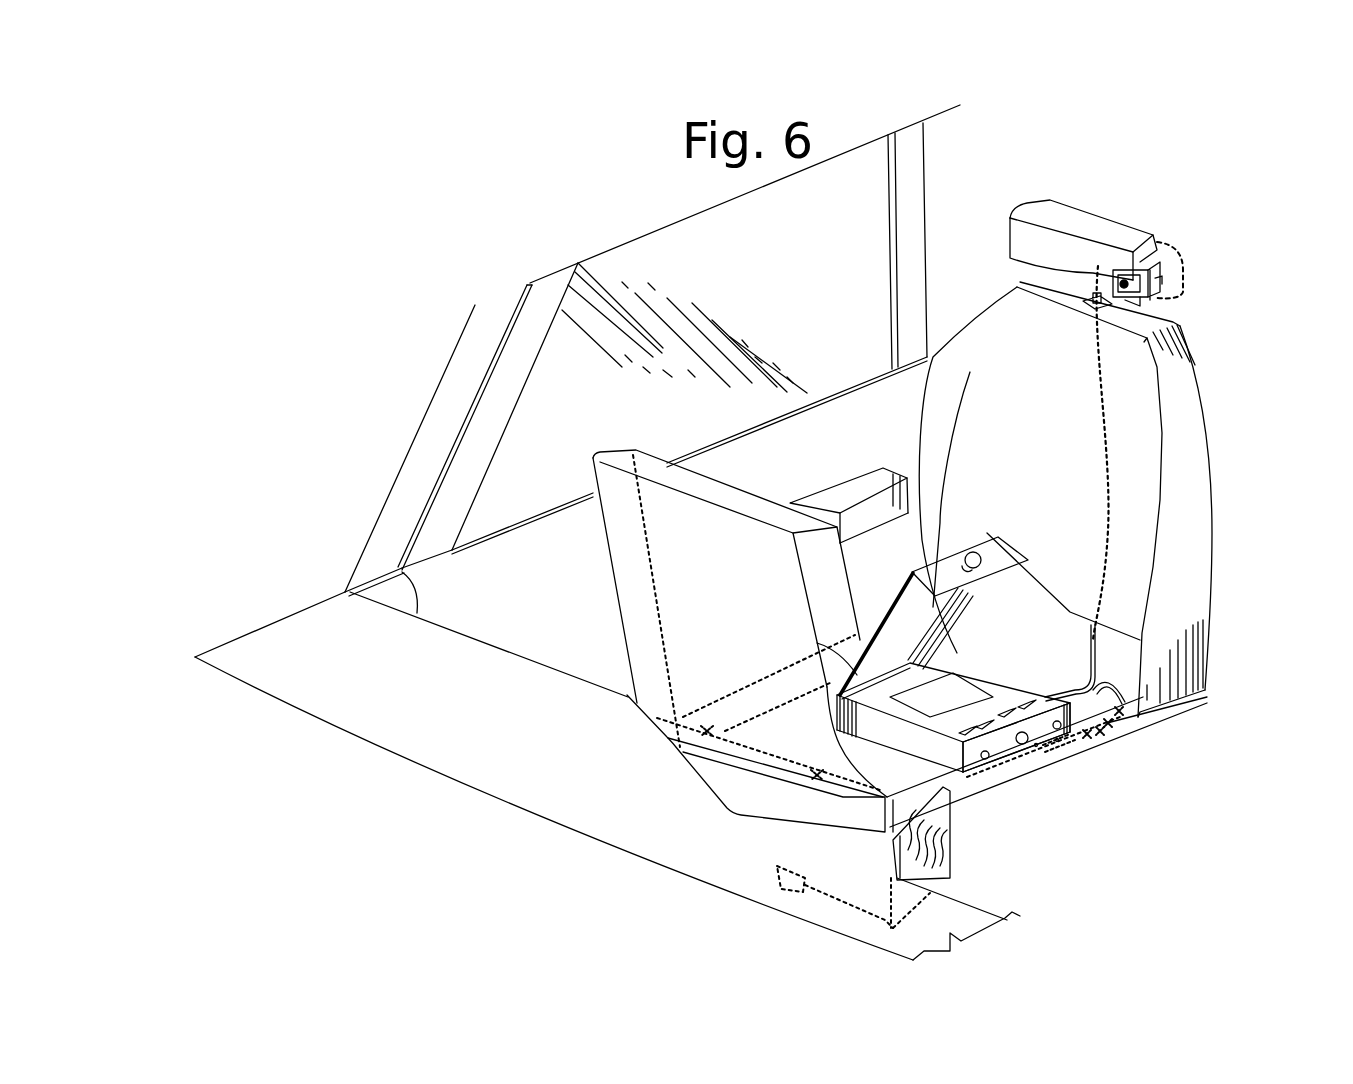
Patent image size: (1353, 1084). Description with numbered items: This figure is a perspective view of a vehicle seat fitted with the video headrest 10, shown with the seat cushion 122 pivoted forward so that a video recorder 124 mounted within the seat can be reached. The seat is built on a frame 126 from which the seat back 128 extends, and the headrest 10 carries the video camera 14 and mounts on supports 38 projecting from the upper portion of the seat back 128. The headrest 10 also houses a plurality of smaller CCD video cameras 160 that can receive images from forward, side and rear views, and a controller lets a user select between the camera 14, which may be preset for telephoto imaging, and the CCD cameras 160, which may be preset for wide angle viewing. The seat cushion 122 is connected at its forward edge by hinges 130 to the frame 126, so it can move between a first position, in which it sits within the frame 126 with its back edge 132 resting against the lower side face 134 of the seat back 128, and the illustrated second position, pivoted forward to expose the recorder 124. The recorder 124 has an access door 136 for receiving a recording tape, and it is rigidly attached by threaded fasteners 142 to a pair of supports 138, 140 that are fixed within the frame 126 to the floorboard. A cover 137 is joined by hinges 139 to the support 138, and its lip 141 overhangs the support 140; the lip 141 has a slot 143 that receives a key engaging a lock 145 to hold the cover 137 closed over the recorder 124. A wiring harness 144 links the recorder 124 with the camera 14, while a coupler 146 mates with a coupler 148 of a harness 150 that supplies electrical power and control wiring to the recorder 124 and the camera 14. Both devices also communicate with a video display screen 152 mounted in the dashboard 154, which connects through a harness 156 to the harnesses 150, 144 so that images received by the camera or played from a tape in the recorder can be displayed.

The video headrest 10 is at (1028, 233).
The video camera 14 is at (1133, 267).
The supports 38 is at (1088, 299).
The seat cushion 122 is at (703, 620).
The video recorder 124 is at (923, 717).
The seat frame 126 is at (1015, 778).
The seat back 128 is at (1190, 440).
The hinges 130 is at (850, 775).
The back edge 132 is at (717, 490).
The lower side face 134 is at (1087, 630).
The access door 136 is at (957, 687).
The cover 137 is at (933, 628).
The support 138 is at (940, 660).
The hinges 139 is at (913, 660).
The support 140 is at (1127, 735).
The lip 141 is at (947, 567).
The threaded fasteners 142 is at (1080, 737).
The slot 143 is at (985, 558).
The wiring harness 144 is at (1093, 640).
The lock 145 is at (1036, 745).
The coupler 146 is at (1120, 712).
The mating coupler 148 is at (1107, 730).
The harness 150 is at (1057, 740).
The video display screen 152 is at (947, 847).
The dashboard 154 is at (505, 683).
The harness 156 is at (847, 902).
The video cameras 160 is at (1157, 245).